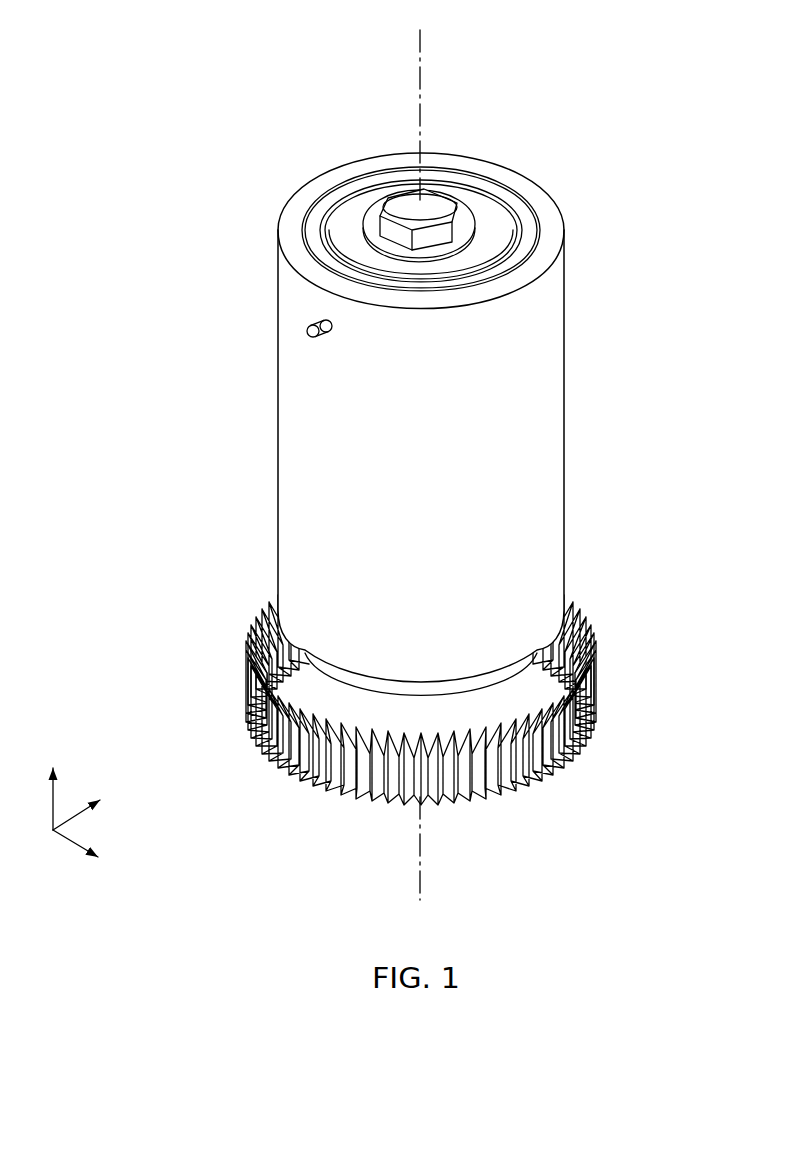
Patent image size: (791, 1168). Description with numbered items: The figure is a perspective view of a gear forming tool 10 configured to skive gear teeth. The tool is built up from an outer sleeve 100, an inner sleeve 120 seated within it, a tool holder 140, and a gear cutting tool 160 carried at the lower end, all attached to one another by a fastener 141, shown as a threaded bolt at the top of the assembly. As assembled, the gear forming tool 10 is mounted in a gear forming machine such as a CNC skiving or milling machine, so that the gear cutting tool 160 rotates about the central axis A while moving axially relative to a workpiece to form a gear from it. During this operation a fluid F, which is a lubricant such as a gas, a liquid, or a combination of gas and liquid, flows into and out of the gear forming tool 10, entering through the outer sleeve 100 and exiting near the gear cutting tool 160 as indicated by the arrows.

The gear forming tool 10 is at (641, 135).
The outer sleeve 100 is at (566, 440).
The inner sleeve 120 is at (313, 232).
The tool holder 140 is at (493, 228).
The fastener 141 is at (403, 198).
The gear cutting tool 160 is at (547, 675).
The central axis A is at (420, 52).
The fluid F is at (307, 337).